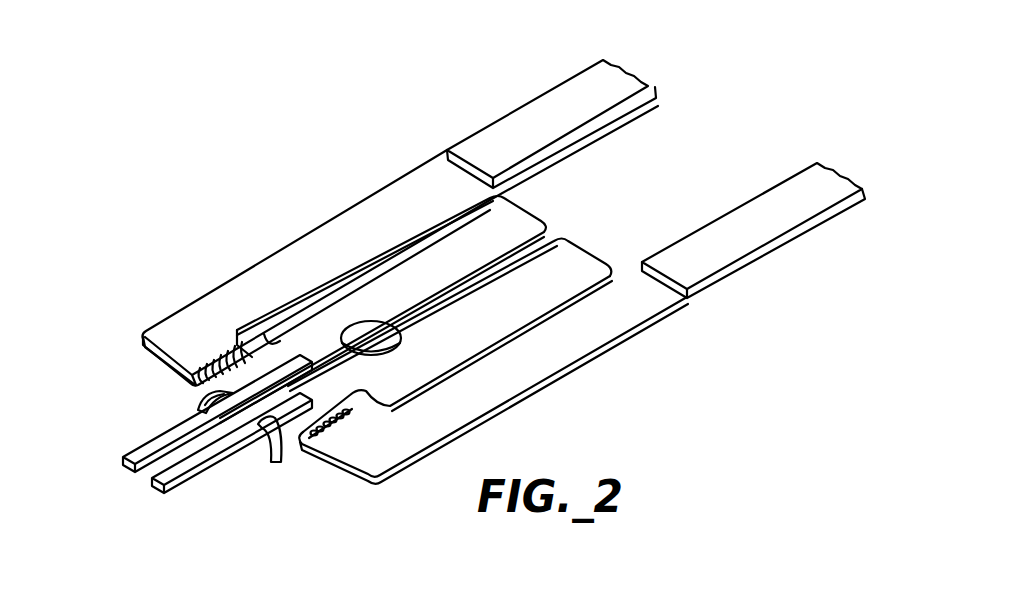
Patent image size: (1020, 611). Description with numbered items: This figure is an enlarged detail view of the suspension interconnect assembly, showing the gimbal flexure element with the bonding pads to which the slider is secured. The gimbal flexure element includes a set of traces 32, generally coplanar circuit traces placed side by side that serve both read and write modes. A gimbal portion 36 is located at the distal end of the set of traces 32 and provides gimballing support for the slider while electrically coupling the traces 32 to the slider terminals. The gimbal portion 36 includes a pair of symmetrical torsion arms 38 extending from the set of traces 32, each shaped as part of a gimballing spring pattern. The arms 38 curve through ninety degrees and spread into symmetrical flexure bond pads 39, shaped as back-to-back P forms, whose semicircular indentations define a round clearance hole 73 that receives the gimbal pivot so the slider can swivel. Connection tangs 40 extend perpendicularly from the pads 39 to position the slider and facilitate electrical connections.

The set of traces 32 is at (535, 118).
The gimbal portion 36 is at (610, 320).
The torsion arms 38 is at (386, 212).
The slider bond pads 39 is at (310, 327).
The connection tangs 40 is at (197, 408).
The round clearance hole 73 is at (368, 338).